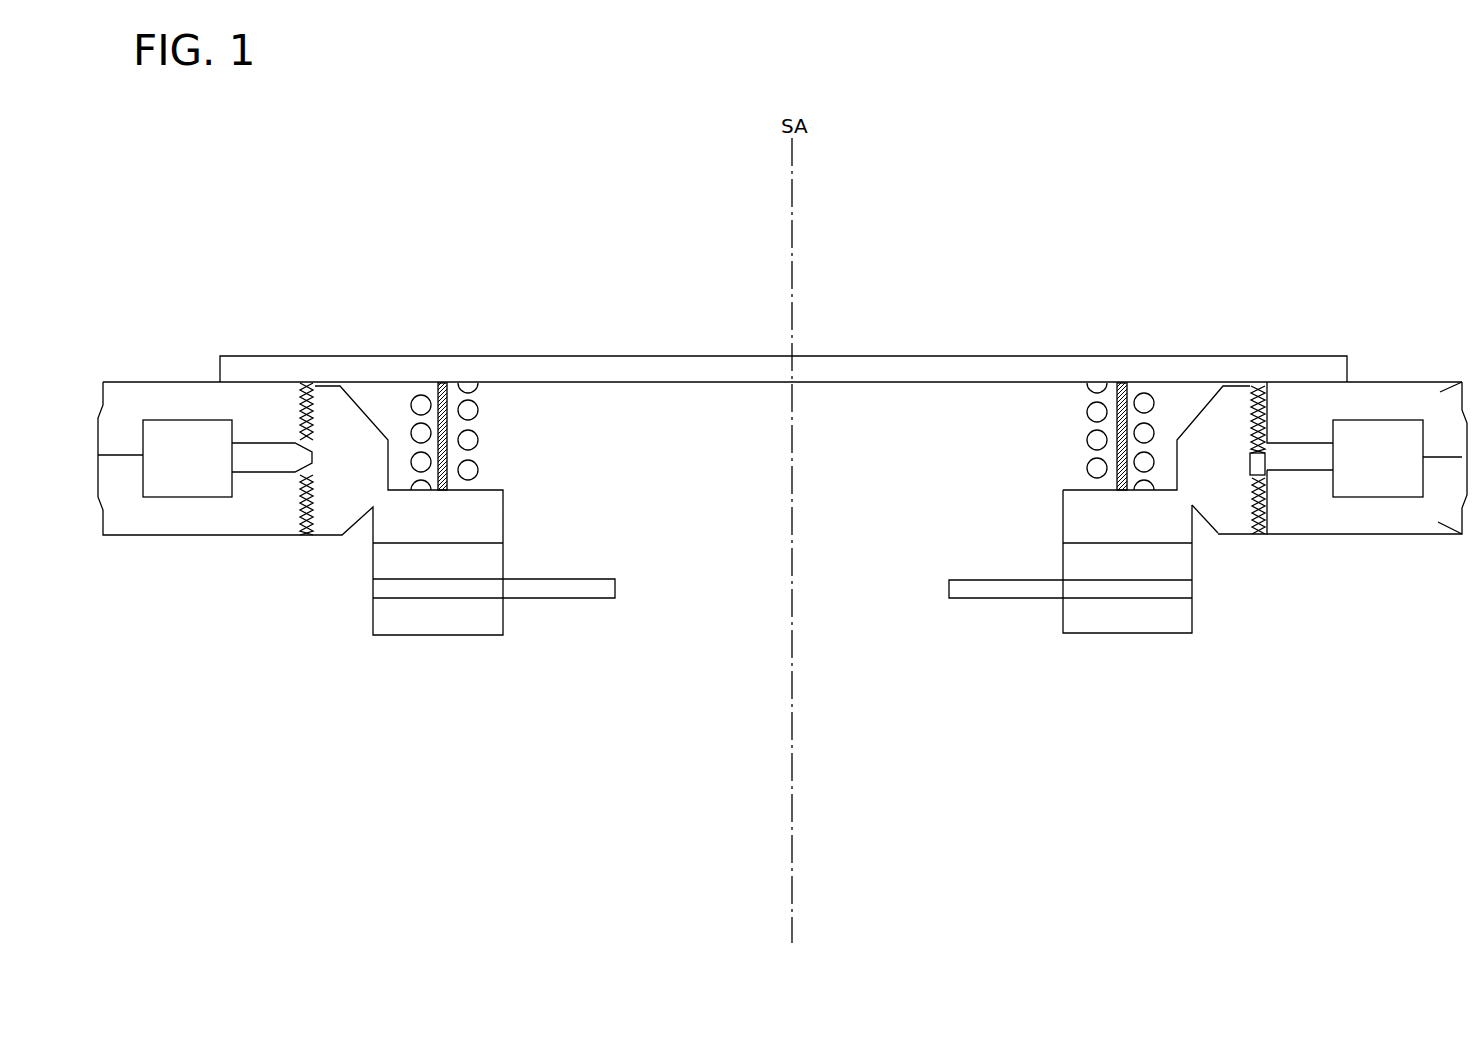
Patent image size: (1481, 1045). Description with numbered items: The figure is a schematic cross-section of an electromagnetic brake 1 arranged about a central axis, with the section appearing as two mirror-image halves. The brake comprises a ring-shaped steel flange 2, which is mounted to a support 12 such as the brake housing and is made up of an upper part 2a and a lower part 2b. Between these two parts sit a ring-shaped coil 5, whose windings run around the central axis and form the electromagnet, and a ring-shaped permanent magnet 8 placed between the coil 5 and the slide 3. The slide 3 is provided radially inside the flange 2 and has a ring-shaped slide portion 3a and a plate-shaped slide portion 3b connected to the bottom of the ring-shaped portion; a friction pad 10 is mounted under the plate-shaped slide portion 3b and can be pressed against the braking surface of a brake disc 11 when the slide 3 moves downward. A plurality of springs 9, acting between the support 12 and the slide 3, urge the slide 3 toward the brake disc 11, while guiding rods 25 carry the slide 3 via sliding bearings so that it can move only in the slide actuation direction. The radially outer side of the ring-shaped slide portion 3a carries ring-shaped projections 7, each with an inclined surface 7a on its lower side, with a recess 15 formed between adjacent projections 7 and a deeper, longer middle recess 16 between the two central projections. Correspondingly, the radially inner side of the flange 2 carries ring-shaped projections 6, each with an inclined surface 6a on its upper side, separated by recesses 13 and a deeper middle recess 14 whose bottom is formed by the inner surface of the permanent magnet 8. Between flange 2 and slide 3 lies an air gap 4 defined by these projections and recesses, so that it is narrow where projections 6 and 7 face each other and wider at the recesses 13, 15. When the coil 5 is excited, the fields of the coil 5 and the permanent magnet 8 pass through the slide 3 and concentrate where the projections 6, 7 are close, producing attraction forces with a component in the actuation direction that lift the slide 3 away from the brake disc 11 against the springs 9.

The electromagnetic brake 1 is at (1396, 231).
The flange 2 is at (1405, 370).
The upper part 2a is at (1440, 392).
The lower part 2b is at (1438, 522).
The slide 3 is at (1050, 510).
The ring-shaped slide portion 3a is at (1233, 532).
The plate-shaped slide portion 3b is at (1075, 523).
The air gap 4 is at (1279, 513).
The coil 5 is at (1385, 490).
The projections 6 is at (1262, 398).
The inclined surface 6a is at (1258, 415).
The projections 7 is at (1250, 410).
The inclined surface 7a is at (1258, 490).
The permanent magnet 8 is at (1318, 467).
The springs 9 is at (1094, 402).
The friction pad 10 is at (1192, 565).
The brake disc 11 is at (1190, 593).
The support 12 is at (1008, 368).
The recess 13 is at (1263, 527).
The middle recess 14 is at (1267, 450).
The recess 15 is at (1260, 525).
The middle recess 16 is at (1250, 455).
The guiding rods 25 is at (1120, 393).